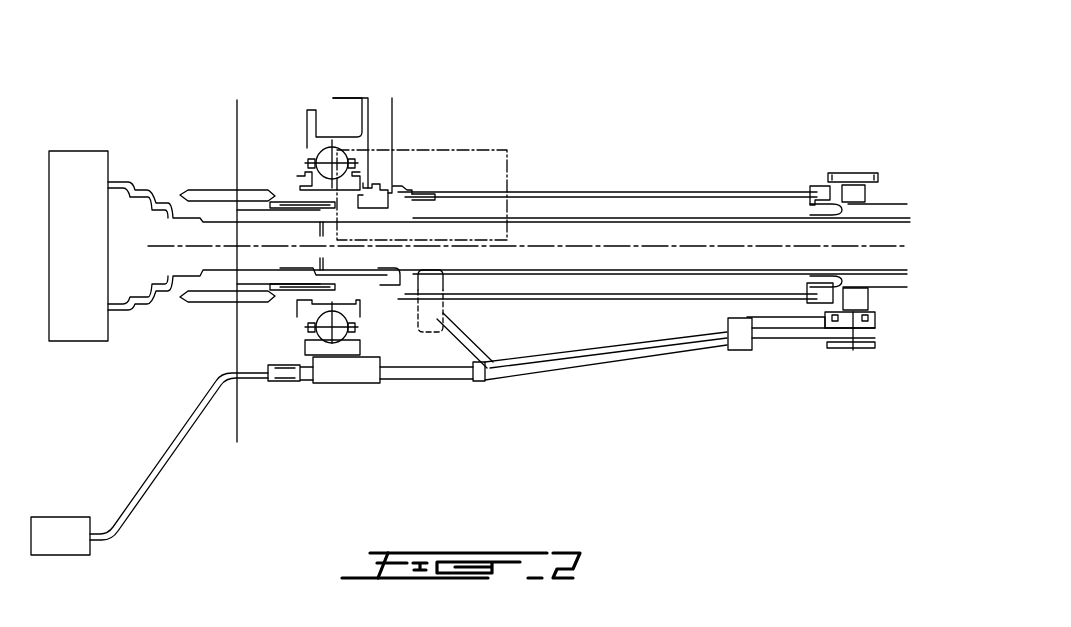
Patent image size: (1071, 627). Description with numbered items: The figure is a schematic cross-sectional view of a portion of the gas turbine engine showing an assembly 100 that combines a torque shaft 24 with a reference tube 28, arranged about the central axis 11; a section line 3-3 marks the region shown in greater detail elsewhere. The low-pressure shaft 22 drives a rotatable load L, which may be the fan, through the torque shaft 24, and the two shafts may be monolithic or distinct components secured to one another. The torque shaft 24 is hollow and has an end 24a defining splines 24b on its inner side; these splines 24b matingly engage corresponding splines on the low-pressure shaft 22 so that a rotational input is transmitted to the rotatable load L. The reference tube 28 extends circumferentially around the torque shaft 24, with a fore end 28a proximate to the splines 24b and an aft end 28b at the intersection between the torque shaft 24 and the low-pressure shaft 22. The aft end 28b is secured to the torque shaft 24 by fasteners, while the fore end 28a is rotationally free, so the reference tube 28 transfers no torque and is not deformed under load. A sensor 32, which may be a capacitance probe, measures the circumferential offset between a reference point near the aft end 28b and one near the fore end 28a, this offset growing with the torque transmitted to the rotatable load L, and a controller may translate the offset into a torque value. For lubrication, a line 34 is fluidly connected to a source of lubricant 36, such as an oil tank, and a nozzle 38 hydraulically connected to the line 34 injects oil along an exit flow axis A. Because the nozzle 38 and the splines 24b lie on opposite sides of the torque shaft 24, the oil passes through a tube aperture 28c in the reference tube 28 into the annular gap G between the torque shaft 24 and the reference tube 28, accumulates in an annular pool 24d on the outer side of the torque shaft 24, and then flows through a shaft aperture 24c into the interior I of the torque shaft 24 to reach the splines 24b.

The assembly 100 is at (680, 115).
The central axis 11 is at (857, 247).
The low-pressure shaft 22 is at (905, 212).
The torque shaft 24 is at (713, 224).
The end of the torque shaft 24a is at (315, 295).
The splines 24b is at (292, 209).
The shaft aperture 24c is at (385, 210).
The pool 24d is at (395, 282).
The reference tube 28 is at (673, 300).
The fore end of the reference tube 28a is at (410, 180).
The aft end of the reference tube 28b is at (822, 306).
The tube aperture 28c is at (433, 195).
The sensor 32 is at (392, 112).
The line 34 is at (395, 385).
The source of lubricant 36 is at (58, 557).
The nozzle 38 is at (468, 343).
The rotatable load L is at (81, 260).
The annular gap G is at (519, 209).
The exit flow axis A is at (440, 288).
The interior of the torque shaft I is at (363, 235).
The section line 3-3 is at (510, 153).